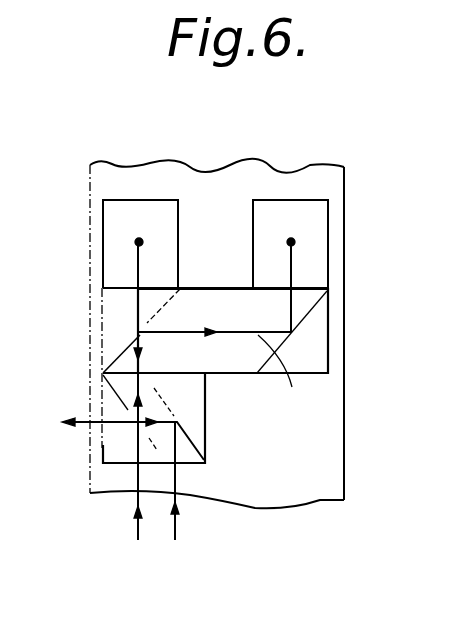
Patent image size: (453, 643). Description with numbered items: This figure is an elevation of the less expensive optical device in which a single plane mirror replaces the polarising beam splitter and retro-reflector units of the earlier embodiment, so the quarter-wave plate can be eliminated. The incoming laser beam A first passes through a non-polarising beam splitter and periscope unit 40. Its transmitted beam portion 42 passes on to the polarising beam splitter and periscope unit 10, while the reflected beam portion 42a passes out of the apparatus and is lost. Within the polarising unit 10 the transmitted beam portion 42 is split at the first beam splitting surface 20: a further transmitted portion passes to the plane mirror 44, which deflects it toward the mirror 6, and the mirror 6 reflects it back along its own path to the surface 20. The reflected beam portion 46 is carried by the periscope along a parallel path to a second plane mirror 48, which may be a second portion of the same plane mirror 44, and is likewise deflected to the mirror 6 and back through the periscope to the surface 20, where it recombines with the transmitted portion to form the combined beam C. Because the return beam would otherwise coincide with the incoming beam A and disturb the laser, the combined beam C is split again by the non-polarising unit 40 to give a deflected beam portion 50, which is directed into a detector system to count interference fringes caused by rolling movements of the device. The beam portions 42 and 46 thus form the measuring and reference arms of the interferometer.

The mirror 6 is at (218, 178).
The polarising beam splitter and periscope unit 10 is at (328, 338).
The first beam splitting surface 20 is at (122, 357).
The non-polarising beam splitter and periscope unit 40 is at (193, 464).
The transmitted beam portion 42 is at (140, 410).
The reflected beam portion 42a is at (85, 426).
The plane mirror 44 is at (142, 200).
The reflected beam portion 46 is at (289, 376).
The second plane mirror 48 is at (300, 204).
The deflected beam portion 50 is at (178, 525).
The laser beam A is at (135, 530).
The combined beam C is at (112, 377).